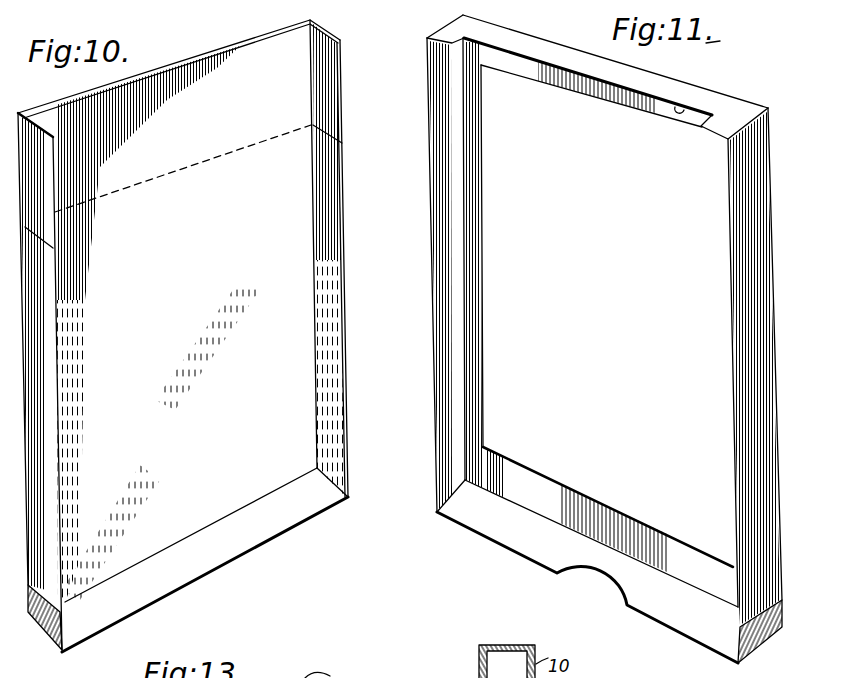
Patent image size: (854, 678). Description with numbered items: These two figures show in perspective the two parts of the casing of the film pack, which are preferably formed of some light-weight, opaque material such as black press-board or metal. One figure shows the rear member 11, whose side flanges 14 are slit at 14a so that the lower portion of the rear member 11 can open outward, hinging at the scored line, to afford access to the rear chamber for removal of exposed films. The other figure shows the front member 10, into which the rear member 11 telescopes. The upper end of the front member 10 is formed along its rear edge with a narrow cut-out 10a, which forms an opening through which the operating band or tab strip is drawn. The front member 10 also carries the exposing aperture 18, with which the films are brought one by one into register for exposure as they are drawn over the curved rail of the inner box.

In FIG. 11, the front member 10 is at (447, 313).
In FIG. 11, the cut-out 10a is at (678, 107).
In FIG. 10, the rear member 11 is at (240, 397).
In FIG. 10, the side flanges 14 is at (325, 198).
In FIG. 10, the slits 14a is at (335, 128).
In FIG. 11, the exposing aperture 18 is at (487, 383).